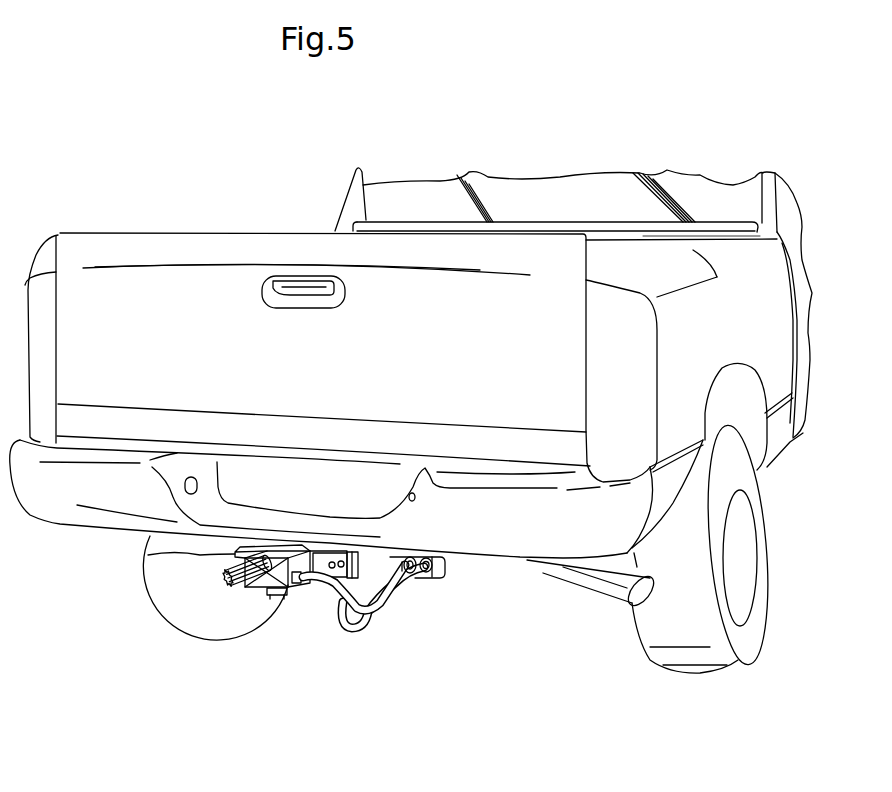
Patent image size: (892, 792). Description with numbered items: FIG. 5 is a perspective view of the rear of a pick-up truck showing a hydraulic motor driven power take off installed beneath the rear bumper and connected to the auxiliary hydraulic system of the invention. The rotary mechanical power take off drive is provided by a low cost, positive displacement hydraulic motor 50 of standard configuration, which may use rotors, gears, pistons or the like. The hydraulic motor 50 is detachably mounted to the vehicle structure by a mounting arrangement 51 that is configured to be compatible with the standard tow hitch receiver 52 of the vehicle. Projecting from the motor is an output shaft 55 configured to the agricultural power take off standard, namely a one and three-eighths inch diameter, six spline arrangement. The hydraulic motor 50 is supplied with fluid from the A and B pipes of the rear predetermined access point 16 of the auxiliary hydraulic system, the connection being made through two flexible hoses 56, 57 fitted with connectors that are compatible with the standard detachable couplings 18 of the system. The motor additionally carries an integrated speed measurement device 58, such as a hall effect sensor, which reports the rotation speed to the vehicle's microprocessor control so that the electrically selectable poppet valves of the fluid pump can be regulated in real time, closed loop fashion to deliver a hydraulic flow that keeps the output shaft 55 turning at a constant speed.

The rear predetermined access point 16 is at (461, 576).
The standard detachable couplings 18 is at (414, 574).
The positive displacement hydraulic motor 50 is at (255, 588).
The mounting arrangement 51 is at (148, 555).
The tow hitch receiver 52 is at (316, 588).
The output shaft 55 is at (227, 580).
The flexible hose 56 is at (355, 629).
The flexible hose 57 is at (393, 620).
The integrated speed measurement device 58 is at (268, 597).
The A pipe A is at (412, 558).
The B pipe B is at (450, 565).